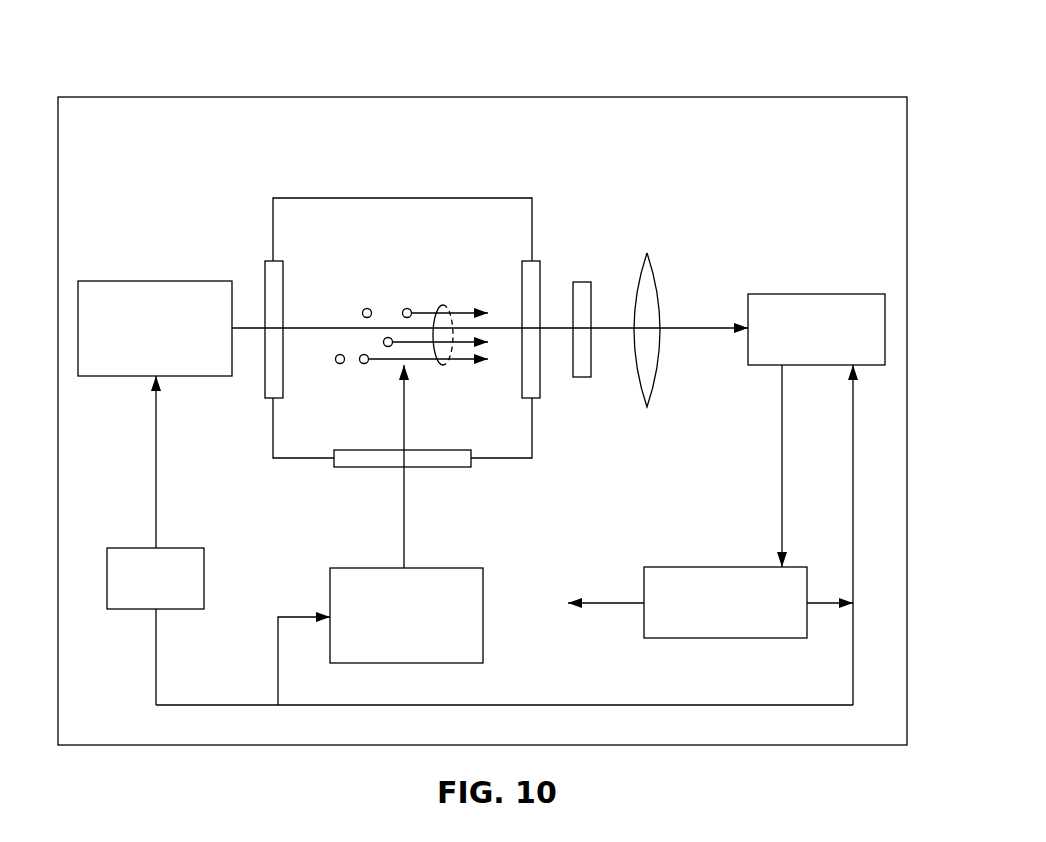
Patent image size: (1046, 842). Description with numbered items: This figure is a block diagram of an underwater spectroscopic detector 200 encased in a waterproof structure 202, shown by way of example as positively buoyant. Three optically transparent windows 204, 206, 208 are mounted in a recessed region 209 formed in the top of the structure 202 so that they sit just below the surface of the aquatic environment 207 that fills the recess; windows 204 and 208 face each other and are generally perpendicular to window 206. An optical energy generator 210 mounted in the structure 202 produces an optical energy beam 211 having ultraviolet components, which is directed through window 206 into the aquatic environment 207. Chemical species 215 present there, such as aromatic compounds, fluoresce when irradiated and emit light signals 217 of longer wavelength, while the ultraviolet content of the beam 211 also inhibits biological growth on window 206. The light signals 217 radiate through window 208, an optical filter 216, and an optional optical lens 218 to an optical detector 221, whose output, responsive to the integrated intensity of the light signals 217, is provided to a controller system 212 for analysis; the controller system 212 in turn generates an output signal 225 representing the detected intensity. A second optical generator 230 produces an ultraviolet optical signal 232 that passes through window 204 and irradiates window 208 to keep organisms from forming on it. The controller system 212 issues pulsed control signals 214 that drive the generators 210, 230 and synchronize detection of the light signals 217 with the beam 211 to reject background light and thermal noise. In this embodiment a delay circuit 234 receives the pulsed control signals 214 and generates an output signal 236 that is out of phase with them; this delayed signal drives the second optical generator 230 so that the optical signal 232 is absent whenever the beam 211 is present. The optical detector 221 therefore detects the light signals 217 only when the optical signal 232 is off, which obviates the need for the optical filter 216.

The detector 200 is at (733, 53).
The waterproof structure 202 is at (236, 97).
The optically transparent window 204 is at (265, 383).
The optically transparent window 206 is at (450, 467).
The aquatic environment 207 is at (430, 225).
The optically transparent window 208 is at (540, 383).
The recessed region 209 is at (337, 198).
The optical energy generator 210 is at (483, 640).
The optical energy beam 211 is at (403, 526).
The controller system 212 is at (684, 567).
The control signals 214 is at (156, 652).
The chemical species 215 is at (388, 337).
The optical filter 216 is at (583, 282).
The light signals 217 is at (445, 365).
The optical lens 218 is at (661, 273).
The optical detector 221 is at (820, 294).
The output signal 225 is at (610, 603).
The second optical generator 230 is at (172, 281).
The optical signal 232 is at (314, 328).
The delay circuit 234 is at (204, 560).
The output signal 236 is at (156, 452).